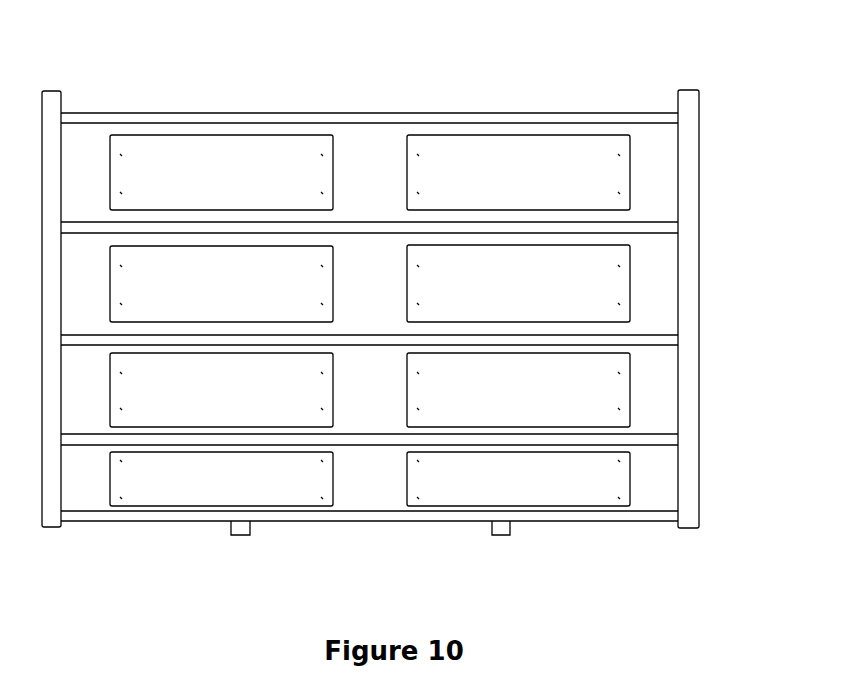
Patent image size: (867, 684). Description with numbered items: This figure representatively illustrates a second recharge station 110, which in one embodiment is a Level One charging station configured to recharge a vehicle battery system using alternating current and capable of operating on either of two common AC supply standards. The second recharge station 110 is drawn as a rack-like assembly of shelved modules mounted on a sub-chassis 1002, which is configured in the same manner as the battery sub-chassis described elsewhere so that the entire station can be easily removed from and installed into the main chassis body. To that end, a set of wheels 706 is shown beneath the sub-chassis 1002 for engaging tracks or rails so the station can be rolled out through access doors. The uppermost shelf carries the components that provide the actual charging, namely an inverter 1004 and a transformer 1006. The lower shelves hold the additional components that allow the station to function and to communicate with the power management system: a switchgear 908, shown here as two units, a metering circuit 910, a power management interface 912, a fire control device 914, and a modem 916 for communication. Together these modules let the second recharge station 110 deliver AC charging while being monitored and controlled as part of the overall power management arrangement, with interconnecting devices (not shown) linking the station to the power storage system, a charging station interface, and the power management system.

The second recharge station 110 is at (224, 96).
The sub-chassis 1002 is at (690, 372).
The inverter 1004 is at (221, 172).
The transformer 1006 is at (518, 172).
The switchgear 908 is at (370, 283).
The metering circuit 910 is at (221, 390).
The power management interface 912 is at (518, 390).
The fire control device 914 is at (221, 479).
The modem 916 is at (518, 480).
The wheels 706 is at (238, 528).